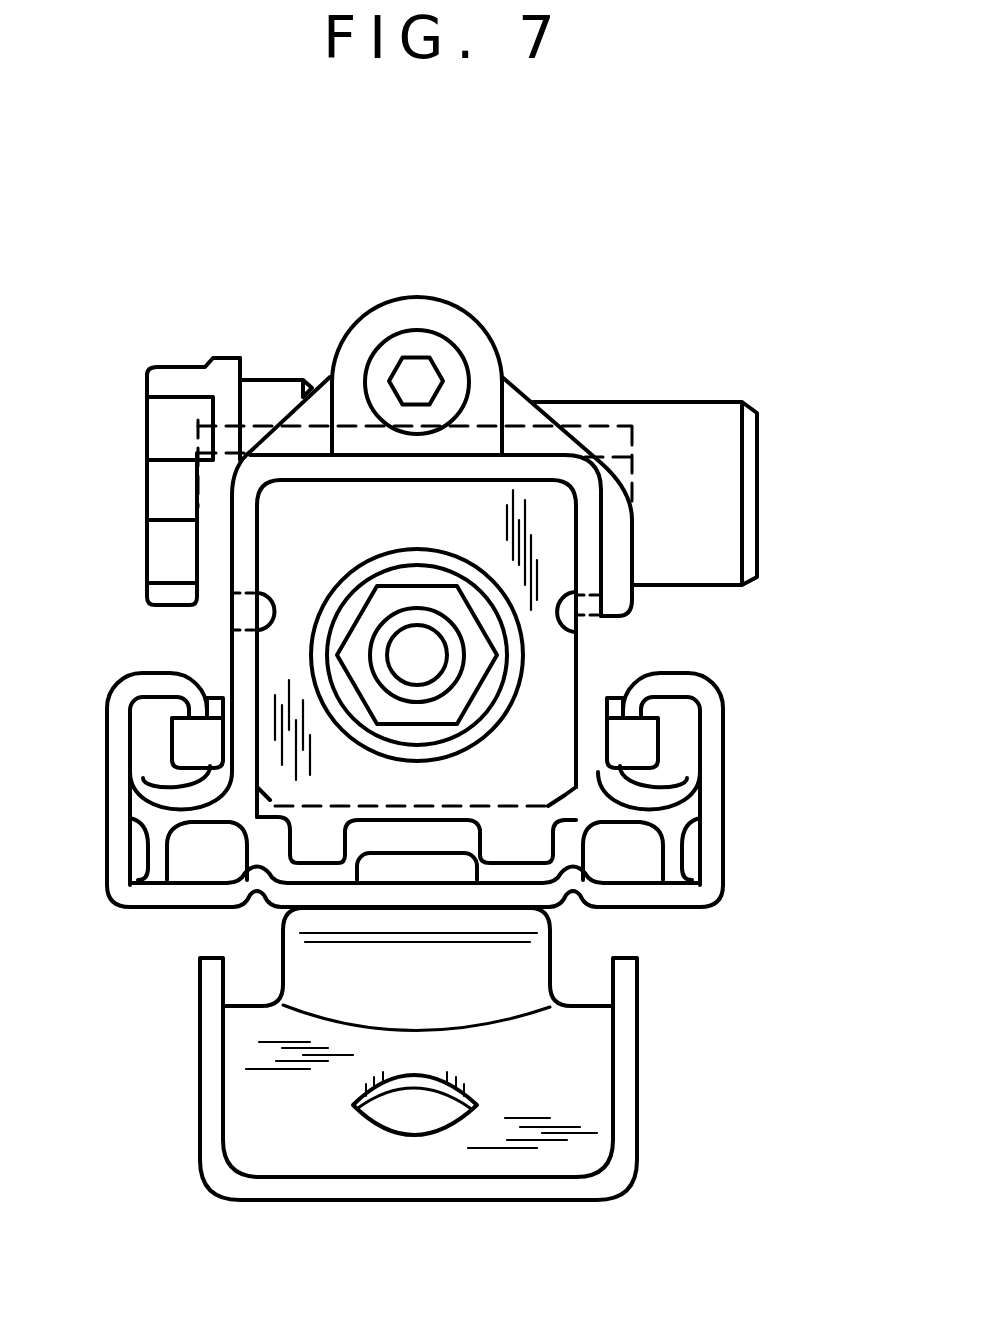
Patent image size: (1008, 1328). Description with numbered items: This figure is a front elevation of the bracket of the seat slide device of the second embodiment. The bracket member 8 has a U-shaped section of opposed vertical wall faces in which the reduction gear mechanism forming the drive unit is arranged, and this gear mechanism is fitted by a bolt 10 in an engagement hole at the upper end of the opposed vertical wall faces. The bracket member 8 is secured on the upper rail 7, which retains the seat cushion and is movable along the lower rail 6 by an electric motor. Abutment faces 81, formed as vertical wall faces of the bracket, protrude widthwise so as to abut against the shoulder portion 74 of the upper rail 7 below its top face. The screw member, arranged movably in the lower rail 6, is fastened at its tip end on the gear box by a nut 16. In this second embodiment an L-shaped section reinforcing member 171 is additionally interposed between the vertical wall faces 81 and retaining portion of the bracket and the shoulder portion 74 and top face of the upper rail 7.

The lower rail 6 is at (717, 832).
The upper rail 7 is at (667, 643).
The bracket member 8 is at (517, 403).
The bolt 10 is at (412, 378).
The nut 16 is at (397, 651).
The shoulder portion 74 is at (587, 545).
The abutment faces 81 is at (610, 565).
The reinforcing member 171 is at (623, 440).